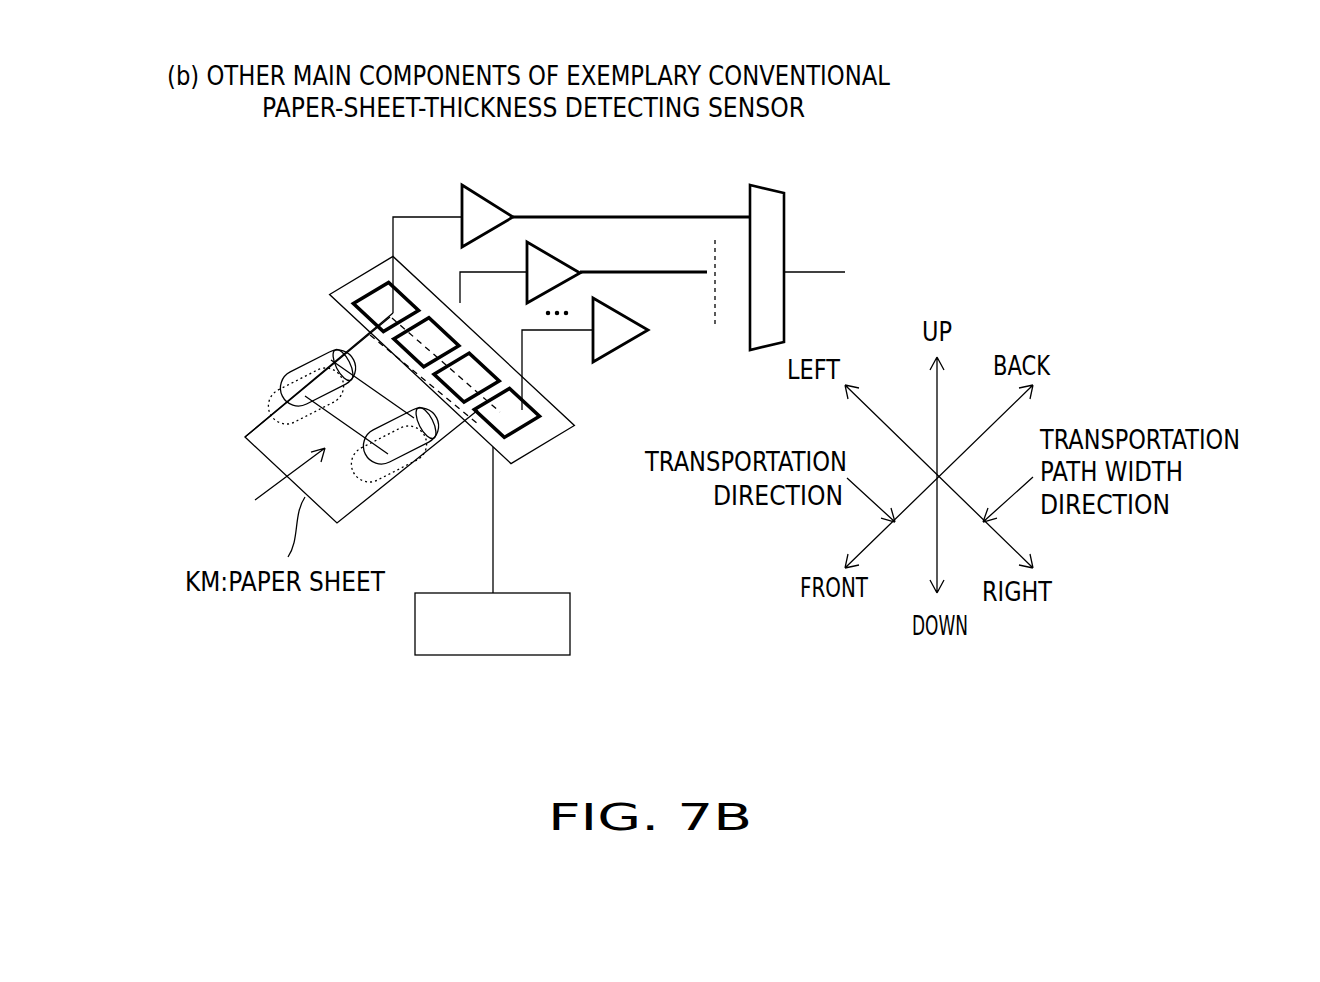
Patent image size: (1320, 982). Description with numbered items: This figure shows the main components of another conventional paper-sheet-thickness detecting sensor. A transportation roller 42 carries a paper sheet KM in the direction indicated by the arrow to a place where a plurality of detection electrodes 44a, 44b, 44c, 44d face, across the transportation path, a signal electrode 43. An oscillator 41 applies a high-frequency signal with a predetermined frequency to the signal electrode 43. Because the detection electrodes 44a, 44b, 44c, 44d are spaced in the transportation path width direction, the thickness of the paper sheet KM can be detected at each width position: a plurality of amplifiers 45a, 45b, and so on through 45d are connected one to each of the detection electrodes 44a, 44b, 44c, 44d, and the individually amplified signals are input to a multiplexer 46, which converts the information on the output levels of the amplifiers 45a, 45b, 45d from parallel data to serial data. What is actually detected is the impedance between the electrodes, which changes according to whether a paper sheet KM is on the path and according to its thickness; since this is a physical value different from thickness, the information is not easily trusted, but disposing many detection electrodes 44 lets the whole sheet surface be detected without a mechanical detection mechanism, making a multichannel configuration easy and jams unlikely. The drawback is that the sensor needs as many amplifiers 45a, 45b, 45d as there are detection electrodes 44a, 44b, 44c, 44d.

The oscillator 41 is at (570, 620).
The transportation roller 42 is at (290, 377).
The signal electrode 43 is at (543, 448).
The detection electrodes 44 is at (439, 324).
The detection electrode 44a is at (376, 306).
The detection electrode 44b is at (422, 330).
The detection electrode 44c is at (480, 380).
The detection electrode 44d is at (530, 405).
The amplifier 45a is at (497, 193).
The amplifier 45b is at (560, 250).
The amplifier 45d is at (622, 322).
The multiplexer 46 is at (786, 210).